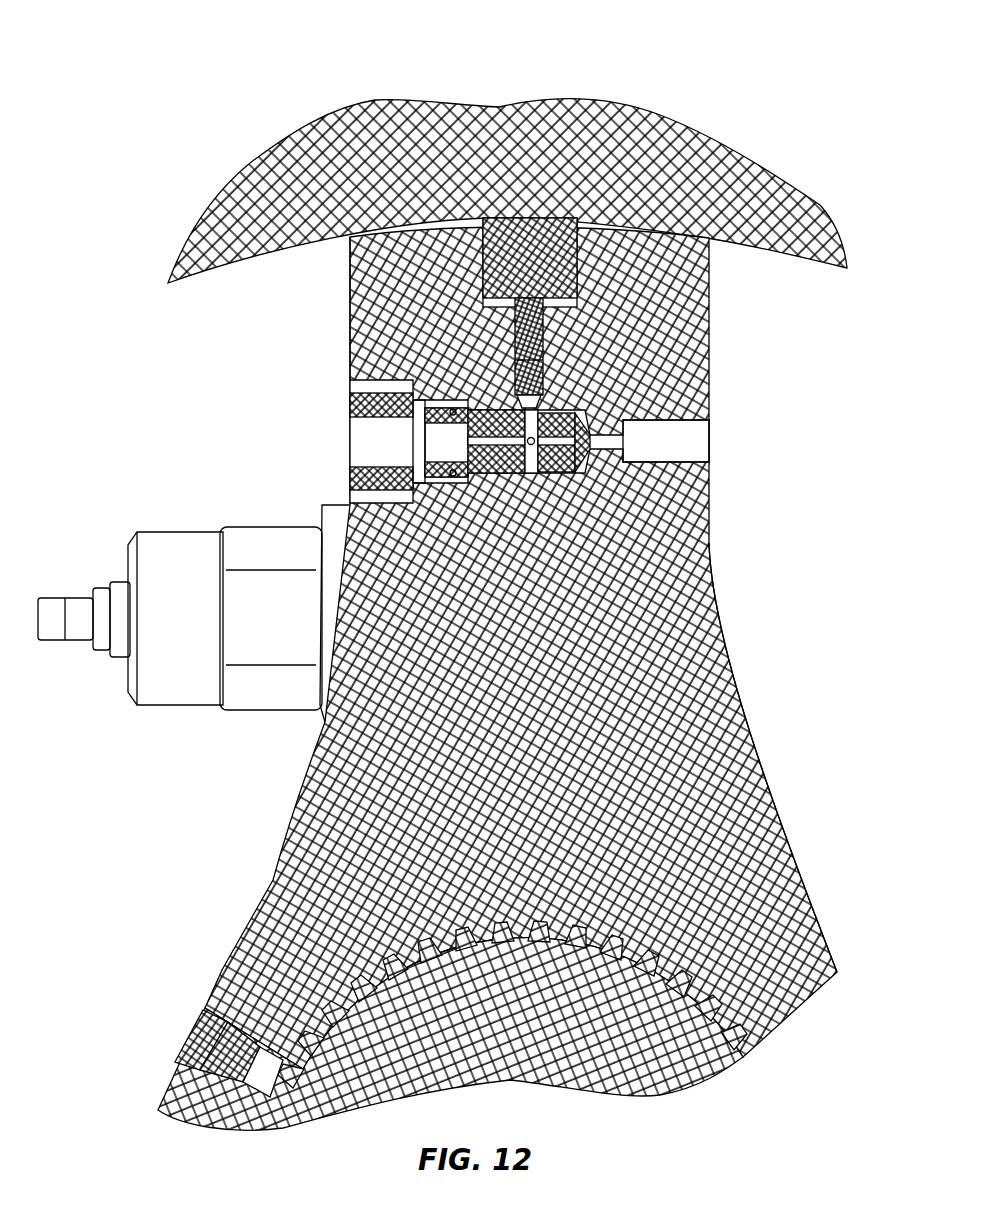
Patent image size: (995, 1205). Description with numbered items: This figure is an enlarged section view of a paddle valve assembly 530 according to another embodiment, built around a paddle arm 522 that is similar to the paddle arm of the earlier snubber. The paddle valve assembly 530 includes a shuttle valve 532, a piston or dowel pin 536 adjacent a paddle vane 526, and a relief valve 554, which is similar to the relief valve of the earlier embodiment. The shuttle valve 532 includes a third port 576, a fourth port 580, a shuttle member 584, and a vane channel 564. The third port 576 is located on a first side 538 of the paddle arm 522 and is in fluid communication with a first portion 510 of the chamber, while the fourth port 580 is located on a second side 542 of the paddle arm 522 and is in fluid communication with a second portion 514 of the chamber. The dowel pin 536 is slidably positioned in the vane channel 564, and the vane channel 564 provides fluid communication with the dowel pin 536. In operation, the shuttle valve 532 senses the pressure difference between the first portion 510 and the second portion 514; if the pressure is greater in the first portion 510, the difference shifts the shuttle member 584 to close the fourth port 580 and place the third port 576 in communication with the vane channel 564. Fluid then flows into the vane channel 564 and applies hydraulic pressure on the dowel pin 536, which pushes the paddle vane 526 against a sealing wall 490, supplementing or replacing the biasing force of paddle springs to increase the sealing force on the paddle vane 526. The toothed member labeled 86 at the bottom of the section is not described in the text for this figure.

The sealing wall 490 is at (252, 290).
The first portion 510 is at (305, 262).
The second portion 514 is at (770, 282).
The paddle arm 522 is at (812, 570).
The paddle vane 526 is at (535, 247).
The dowel pin 536 is at (530, 327).
The vane channel 564 is at (522, 373).
The first side 538 is at (349, 297).
The shuttle valve 532 is at (347, 442).
The third port 576 is at (374, 462).
The fourth port 580 is at (700, 456).
The shuttle member 584 is at (533, 468).
The second side 542 is at (723, 632).
The paddle valve assembly 530 is at (180, 611).
The relief valve 554 is at (282, 734).
The ring gear 86 is at (697, 1052).